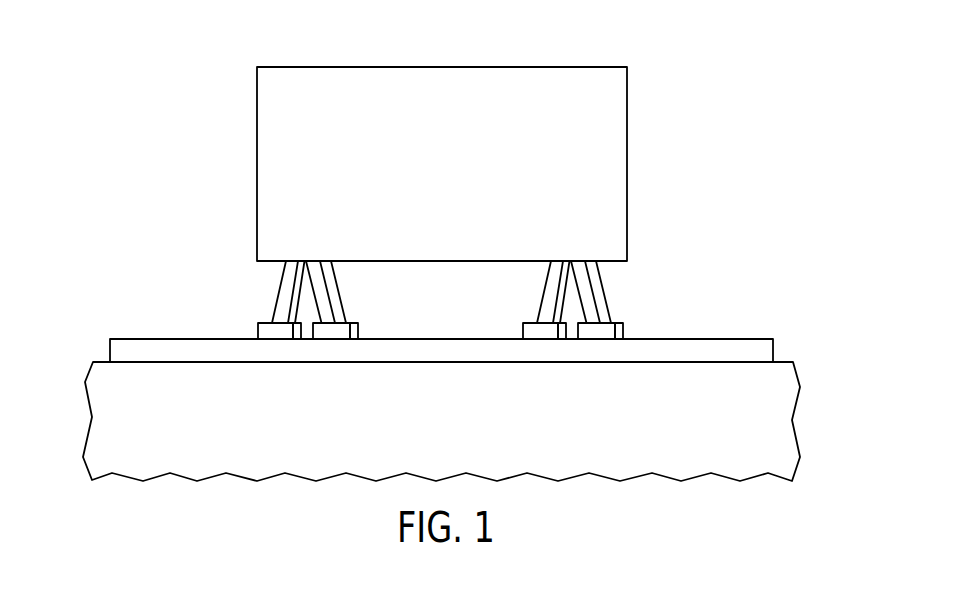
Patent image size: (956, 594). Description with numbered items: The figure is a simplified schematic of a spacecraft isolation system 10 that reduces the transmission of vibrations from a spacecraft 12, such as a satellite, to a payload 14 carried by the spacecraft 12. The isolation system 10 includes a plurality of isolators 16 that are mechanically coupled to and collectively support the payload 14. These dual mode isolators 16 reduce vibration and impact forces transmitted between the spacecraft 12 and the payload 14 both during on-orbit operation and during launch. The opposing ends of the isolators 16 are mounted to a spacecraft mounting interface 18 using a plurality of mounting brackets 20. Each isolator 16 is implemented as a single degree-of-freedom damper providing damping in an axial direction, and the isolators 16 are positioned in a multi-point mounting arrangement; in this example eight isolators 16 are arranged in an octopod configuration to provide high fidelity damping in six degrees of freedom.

The spacecraft isolation system 10 is at (213, 271).
The spacecraft 12 is at (303, 468).
The payload 14 is at (438, 78).
The isolator 16 is at (300, 282).
The spacecraft mounting interface 18 is at (130, 347).
The mounting bracket 20 is at (267, 330).